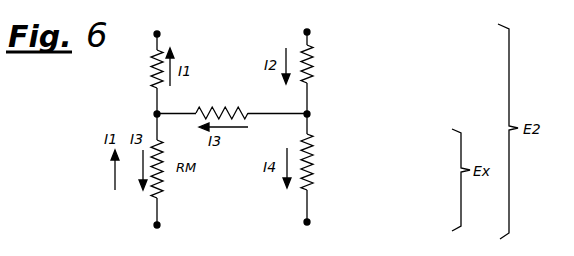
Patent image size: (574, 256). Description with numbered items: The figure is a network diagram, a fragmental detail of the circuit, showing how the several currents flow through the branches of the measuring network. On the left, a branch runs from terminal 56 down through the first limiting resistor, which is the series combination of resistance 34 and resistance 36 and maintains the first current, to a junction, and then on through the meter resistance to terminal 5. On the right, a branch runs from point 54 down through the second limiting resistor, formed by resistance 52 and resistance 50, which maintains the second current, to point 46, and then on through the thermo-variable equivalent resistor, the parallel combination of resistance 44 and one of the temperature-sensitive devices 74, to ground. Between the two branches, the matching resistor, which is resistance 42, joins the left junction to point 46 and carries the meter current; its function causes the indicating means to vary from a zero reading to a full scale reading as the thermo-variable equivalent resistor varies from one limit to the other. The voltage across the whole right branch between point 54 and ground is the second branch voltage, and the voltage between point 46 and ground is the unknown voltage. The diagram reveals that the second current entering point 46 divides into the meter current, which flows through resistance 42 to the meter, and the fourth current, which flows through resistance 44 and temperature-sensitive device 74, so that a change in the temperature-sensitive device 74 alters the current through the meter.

The terminal 56 is at (157, 34).
The point 54 is at (307, 32).
The point 46 is at (307, 114).
The terminal 5 is at (157, 225).
The resistance 34 is at (120, 69).
The resistance 36 is at (120, 69).
The resistance 42 is at (222, 103).
The resistance 52 is at (351, 64).
The resistance 50 is at (351, 64).
The resistance 44 is at (361, 162).
The temperature-sensitive device 74 is at (361, 162).